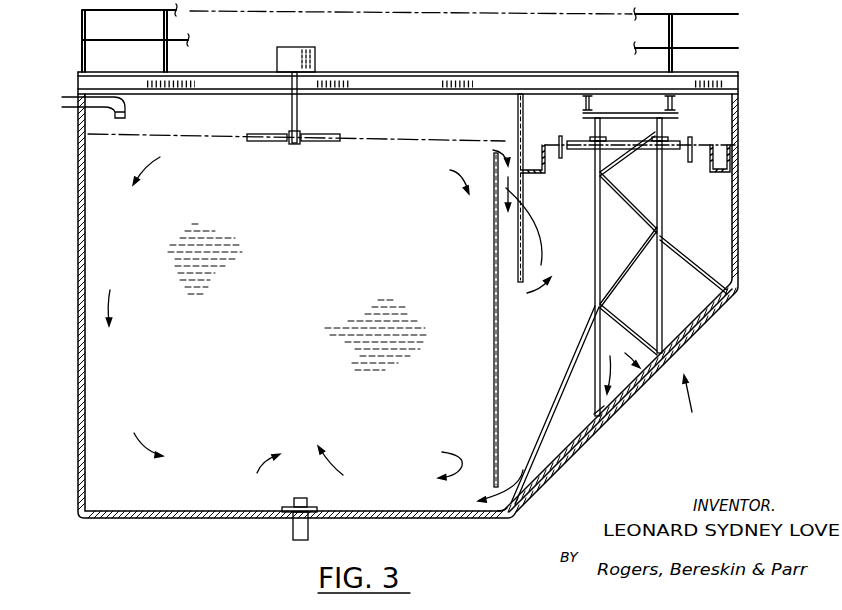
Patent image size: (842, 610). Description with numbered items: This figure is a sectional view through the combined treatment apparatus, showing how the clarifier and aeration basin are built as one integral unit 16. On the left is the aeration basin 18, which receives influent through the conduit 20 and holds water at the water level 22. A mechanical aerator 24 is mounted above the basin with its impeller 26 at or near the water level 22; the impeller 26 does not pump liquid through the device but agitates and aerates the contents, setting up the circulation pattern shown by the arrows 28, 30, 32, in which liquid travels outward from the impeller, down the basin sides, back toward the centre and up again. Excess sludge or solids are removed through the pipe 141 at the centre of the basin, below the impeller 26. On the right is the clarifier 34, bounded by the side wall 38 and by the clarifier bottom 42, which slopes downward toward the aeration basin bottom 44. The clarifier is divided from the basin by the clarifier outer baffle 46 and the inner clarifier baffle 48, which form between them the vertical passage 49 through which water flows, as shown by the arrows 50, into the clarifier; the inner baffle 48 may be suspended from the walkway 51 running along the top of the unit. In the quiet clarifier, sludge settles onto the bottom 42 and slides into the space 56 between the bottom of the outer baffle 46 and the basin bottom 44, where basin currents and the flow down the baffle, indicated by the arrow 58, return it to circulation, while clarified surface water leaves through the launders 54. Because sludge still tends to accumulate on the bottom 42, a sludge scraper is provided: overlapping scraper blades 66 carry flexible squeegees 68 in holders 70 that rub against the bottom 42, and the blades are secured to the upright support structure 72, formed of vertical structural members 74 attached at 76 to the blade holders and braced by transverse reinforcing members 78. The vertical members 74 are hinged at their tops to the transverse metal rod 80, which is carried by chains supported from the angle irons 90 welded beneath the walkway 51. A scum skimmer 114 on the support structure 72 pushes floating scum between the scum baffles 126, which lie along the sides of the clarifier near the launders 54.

The integral unit 16 is at (217, 536).
The aeration basin 18 is at (299, 296).
The conduit 20 is at (122, 107).
The water level 22 is at (398, 138).
The mechanical aerator 24 is at (298, 48).
The impeller 26 is at (327, 134).
The flow pattern arrow 28 is at (452, 185).
The flow pattern arrow 30 is at (442, 454).
The flow pattern arrow 32 is at (332, 452).
The clarifier 34 is at (702, 409).
The side wall 38 is at (737, 200).
The clarifier bottom 42 is at (577, 453).
The aeration basin bottom 44 is at (423, 519).
The clarifier outer baffle 46 is at (494, 220).
The inner clarifier baffle 48 is at (518, 246).
The vertical passage 49 is at (505, 170).
The flow arrows 50 is at (534, 240).
The walkway 51 is at (447, 73).
The launders 54 is at (532, 158).
The space 56 is at (498, 507).
The flow arrow 58 is at (521, 470).
The scraper blades 66 is at (620, 362).
The flexible squeegees 68 is at (706, 330).
The blade holders 70 is at (687, 325).
The support structure 72 is at (664, 222).
The vertical structural members 74 is at (657, 205).
The attachment point 76 is at (617, 412).
The transverse reinforcing members 78 is at (624, 277).
The transverse metal rod 80 is at (609, 112).
The angle irons 90 is at (676, 112).
The scum skimmer 114 is at (680, 137).
The scum baffles 126 is at (560, 146).
The pipe 141 is at (293, 528).